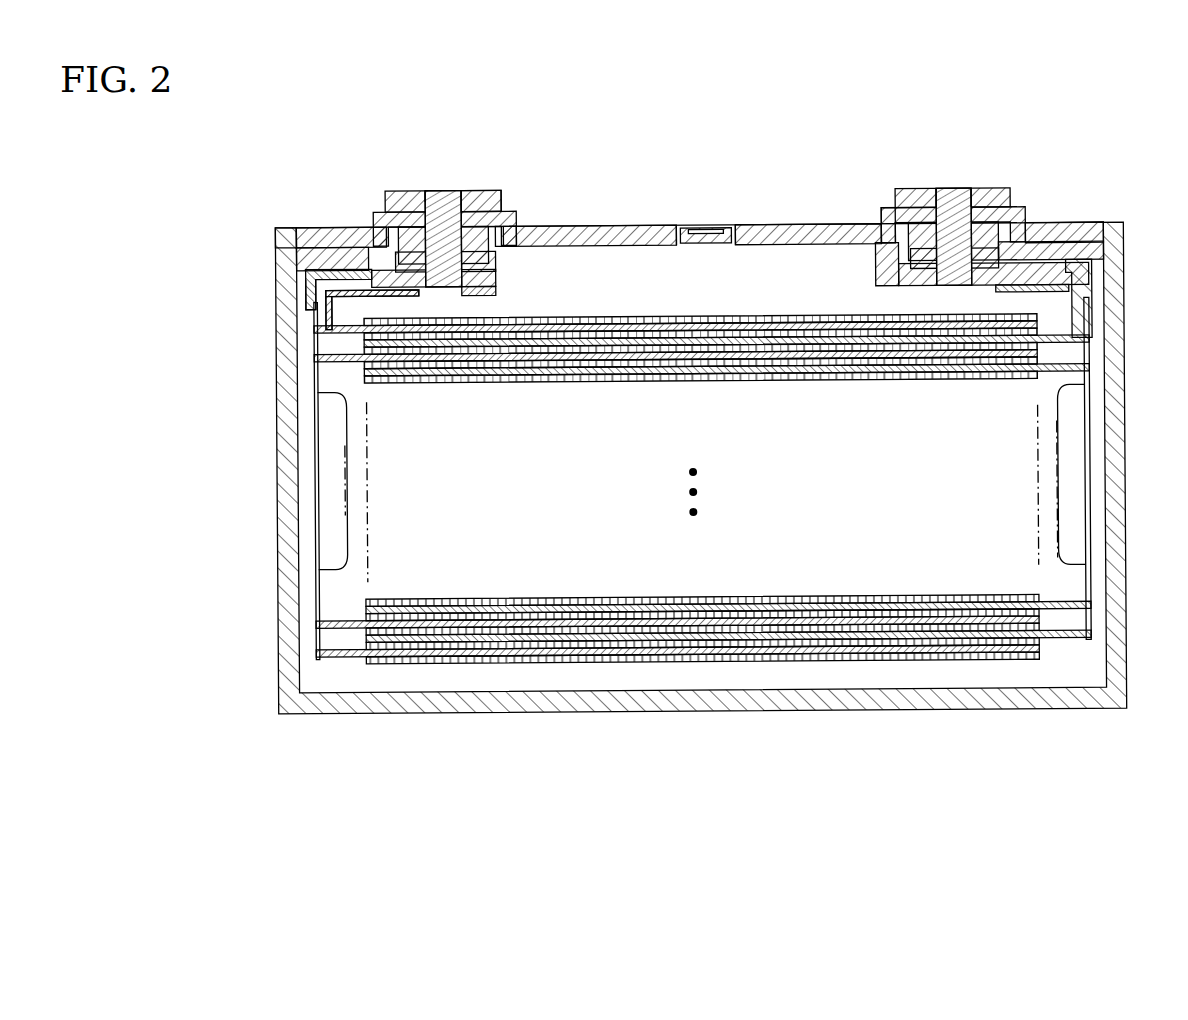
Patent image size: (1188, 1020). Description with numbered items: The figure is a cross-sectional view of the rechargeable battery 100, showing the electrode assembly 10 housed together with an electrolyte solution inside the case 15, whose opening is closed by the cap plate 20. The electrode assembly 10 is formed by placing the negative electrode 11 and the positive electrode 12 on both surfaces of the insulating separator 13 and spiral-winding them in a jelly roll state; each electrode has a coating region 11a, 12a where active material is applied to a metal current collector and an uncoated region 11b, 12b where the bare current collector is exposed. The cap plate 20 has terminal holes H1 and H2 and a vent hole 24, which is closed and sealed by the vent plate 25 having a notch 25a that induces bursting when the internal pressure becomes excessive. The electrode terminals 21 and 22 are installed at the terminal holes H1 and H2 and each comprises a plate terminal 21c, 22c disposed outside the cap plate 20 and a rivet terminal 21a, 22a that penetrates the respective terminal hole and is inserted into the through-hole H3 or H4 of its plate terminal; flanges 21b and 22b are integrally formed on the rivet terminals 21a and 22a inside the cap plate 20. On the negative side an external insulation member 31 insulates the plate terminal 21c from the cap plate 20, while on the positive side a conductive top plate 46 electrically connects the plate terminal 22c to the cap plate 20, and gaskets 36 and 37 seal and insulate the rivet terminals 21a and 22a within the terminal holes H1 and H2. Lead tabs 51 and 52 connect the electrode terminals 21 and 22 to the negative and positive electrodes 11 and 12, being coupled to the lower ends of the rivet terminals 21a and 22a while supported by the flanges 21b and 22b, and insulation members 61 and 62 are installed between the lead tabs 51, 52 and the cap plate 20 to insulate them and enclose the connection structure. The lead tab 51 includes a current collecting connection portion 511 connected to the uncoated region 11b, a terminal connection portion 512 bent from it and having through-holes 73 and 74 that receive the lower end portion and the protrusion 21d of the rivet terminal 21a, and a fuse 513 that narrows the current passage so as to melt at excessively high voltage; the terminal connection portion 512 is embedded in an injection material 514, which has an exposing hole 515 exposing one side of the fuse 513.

The rechargeable battery 100 is at (732, 92).
The electrode assembly 10 is at (703, 556).
The negative electrode 11 is at (677, 557).
The coating region 11a is at (455, 657).
The uncoated region 11b is at (333, 662).
The positive electrode 12 is at (728, 554).
The coating region 12a is at (937, 645).
The uncoated region 12b is at (1063, 640).
The separator 13 is at (662, 655).
The case 15 is at (1115, 440).
The cap plate 20 is at (625, 232).
The electrode terminal 21 is at (448, 186).
The rivet terminal 21a is at (452, 290).
The flange 21b is at (520, 226).
The plate terminal 21c is at (405, 190).
The protrusion 21d is at (418, 288).
The electrode terminal 22 is at (955, 186).
The rivet terminal 22a is at (957, 255).
The flange 22b is at (880, 262).
The plate terminal 22c is at (1000, 190).
The vent hole 24 is at (705, 246).
The vent plate 25 is at (730, 228).
The notch 25a is at (705, 227).
The external insulation member 31 is at (503, 197).
The gasket 36 is at (378, 213).
The gasket 37 is at (1015, 212).
The conductive top plate 46 is at (893, 212).
The lead tab 51 is at (297, 325).
The current collecting connection portion 511 is at (277, 293).
The terminal connection portion 512 is at (283, 287).
The fuse 513 is at (282, 315).
The injection material 514 is at (300, 330).
The exposing hole 515 is at (313, 257).
The lead tab 52 is at (1082, 318).
The insulation member 61 is at (270, 243).
The insulation member 62 is at (1108, 246).
The through-hole 73 is at (480, 291).
The through-hole 74 is at (345, 260).
The terminal hole H1 is at (470, 188).
The terminal hole H2 is at (932, 196).
The through-hole H3 is at (440, 188).
The through-hole H4 is at (968, 198).